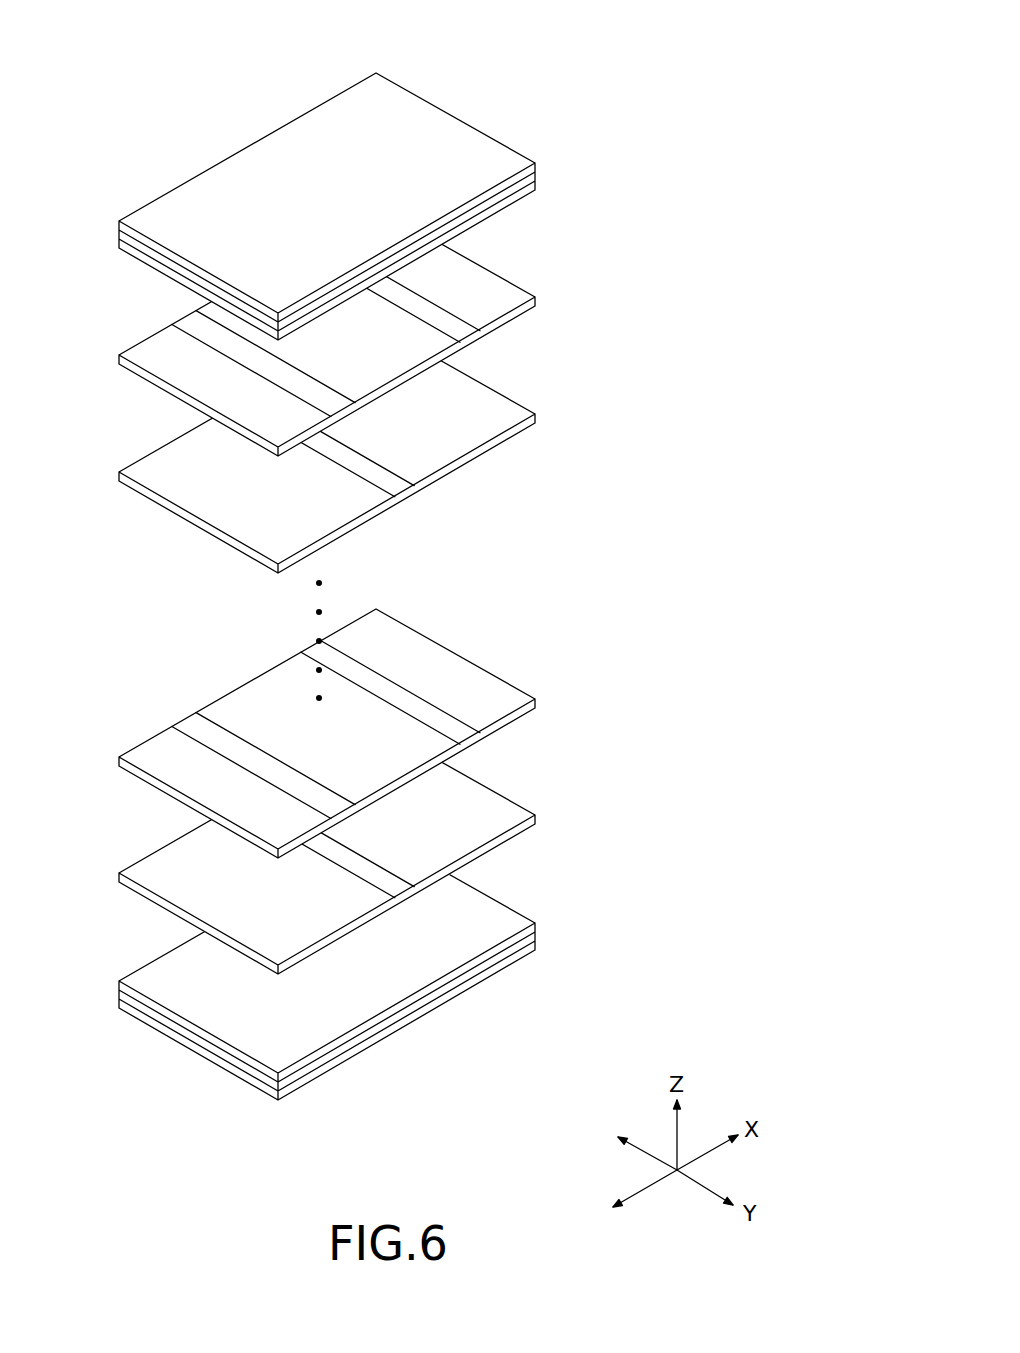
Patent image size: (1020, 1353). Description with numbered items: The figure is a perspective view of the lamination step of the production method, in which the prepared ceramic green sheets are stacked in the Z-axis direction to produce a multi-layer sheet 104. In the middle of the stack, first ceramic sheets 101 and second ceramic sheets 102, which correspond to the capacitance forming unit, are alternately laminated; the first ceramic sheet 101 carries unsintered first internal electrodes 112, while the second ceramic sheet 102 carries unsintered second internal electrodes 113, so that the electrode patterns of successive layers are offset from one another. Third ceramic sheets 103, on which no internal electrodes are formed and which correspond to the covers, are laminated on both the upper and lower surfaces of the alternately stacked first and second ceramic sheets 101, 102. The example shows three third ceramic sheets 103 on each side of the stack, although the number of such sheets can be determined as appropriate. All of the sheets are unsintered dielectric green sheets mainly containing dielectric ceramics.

The multi-layer sheet 104 is at (383, 552).
The third ceramic sheet 103 is at (557, 172).
The first ceramic sheet 101 is at (555, 290).
The second ceramic sheet 102 is at (556, 407).
The unsintered first internal electrode 112 is at (151, 348).
The unsintered second internal electrode 113 is at (151, 466).